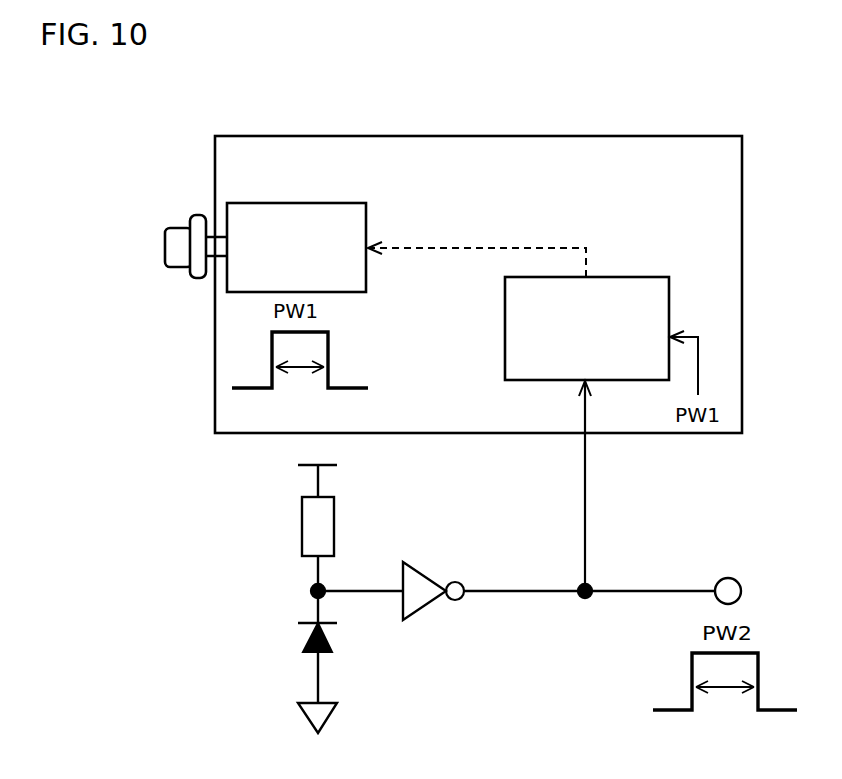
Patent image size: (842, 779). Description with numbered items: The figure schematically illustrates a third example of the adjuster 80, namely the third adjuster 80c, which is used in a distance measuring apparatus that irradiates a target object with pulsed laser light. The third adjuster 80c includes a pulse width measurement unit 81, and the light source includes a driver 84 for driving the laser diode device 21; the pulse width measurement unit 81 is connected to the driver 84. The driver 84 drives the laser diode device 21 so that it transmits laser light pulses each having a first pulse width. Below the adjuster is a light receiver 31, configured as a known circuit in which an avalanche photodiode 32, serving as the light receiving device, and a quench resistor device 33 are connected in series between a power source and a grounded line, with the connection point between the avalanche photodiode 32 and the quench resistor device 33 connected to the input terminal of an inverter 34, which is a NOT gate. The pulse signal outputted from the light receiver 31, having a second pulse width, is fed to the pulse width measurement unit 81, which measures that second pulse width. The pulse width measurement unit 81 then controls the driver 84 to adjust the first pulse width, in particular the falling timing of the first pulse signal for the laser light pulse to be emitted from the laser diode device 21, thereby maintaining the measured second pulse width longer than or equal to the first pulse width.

The adjuster 80 is at (478, 253).
The third adjuster 80c is at (440, 136).
The driver 84 is at (366, 220).
The laser diode device 21 is at (178, 227).
The pulse width measurement unit 81 is at (620, 277).
The light receiver 31 is at (208, 492).
The quench resistor device 33 is at (302, 527).
The avalanche photodiode 32 is at (303, 645).
The inverter 34 is at (420, 570).